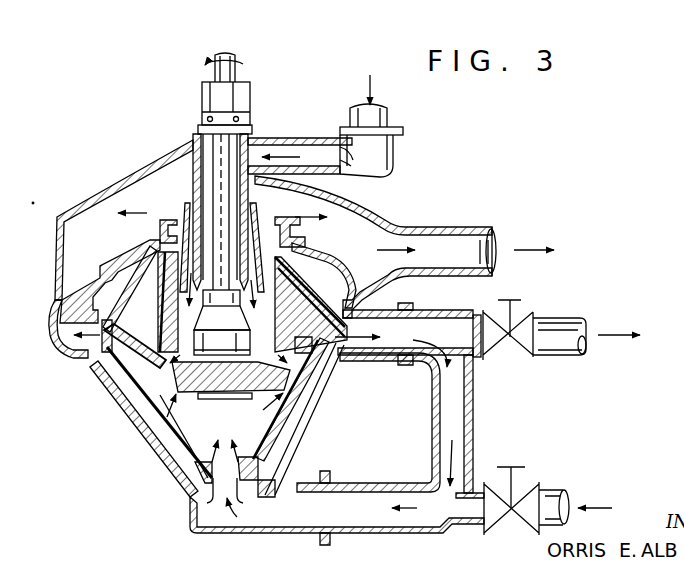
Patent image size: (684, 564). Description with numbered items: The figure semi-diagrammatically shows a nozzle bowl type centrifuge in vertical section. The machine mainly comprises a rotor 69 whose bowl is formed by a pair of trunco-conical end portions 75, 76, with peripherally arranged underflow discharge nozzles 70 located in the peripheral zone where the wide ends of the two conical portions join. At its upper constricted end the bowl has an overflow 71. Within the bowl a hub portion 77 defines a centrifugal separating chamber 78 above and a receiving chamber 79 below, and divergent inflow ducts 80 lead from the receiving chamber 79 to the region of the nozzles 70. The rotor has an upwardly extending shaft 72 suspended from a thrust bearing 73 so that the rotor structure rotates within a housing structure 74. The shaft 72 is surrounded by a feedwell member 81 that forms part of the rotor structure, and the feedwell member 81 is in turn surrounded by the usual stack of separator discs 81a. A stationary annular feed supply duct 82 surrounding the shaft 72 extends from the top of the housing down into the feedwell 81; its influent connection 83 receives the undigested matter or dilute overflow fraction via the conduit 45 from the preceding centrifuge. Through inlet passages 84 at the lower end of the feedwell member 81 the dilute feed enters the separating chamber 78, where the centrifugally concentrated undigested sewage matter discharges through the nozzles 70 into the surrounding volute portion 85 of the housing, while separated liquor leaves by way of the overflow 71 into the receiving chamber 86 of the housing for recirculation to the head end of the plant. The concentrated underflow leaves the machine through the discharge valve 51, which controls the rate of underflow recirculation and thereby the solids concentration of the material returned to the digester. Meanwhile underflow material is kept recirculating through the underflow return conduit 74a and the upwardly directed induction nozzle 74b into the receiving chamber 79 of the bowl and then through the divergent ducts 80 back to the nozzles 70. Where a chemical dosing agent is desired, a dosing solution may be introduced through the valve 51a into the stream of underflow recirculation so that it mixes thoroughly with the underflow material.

The conduit 45 is at (388, 124).
The discharge valve 51 is at (528, 322).
The valve 51a is at (527, 495).
The rotor 69 is at (122, 308).
The underflow discharge nozzles 70 is at (101, 342).
The overflow 71 is at (281, 221).
The shaft 72 is at (221, 156).
The thrust bearing 73 is at (250, 114).
The housing structure 74 is at (122, 182).
The underflow return conduit 74a is at (458, 424).
The induction nozzle 74b is at (197, 515).
The trunco-conical end portion 75 is at (150, 398).
The trunco-conical end portion 76 is at (290, 307).
The hub portion 77 is at (190, 387).
The centrifugal separating chamber 78 is at (130, 290).
The receiving chamber 79 is at (217, 437).
The divergent inflow ducts 80 is at (324, 383).
The feedwell member 81 is at (268, 224).
The stack of separator discs 81a is at (160, 314).
The feed supply duct 82 is at (193, 193).
The influent connection 83 is at (297, 154).
The inlet passages 84 is at (295, 353).
The volute portion 85 is at (68, 352).
The receiving chamber of the housing 86 is at (77, 251).